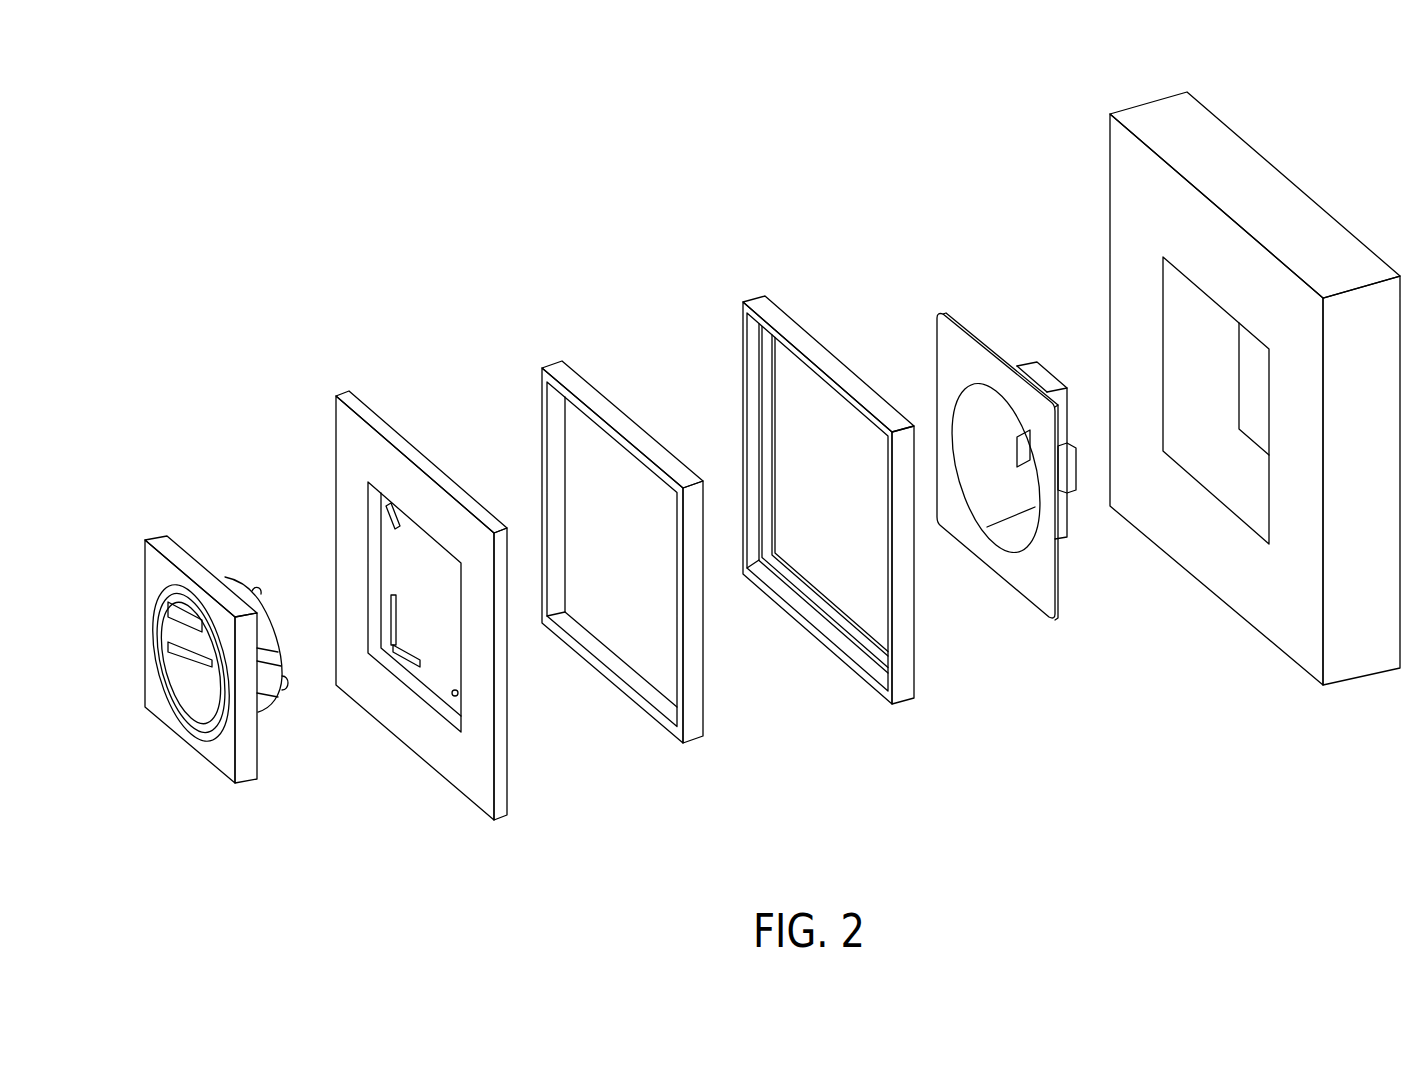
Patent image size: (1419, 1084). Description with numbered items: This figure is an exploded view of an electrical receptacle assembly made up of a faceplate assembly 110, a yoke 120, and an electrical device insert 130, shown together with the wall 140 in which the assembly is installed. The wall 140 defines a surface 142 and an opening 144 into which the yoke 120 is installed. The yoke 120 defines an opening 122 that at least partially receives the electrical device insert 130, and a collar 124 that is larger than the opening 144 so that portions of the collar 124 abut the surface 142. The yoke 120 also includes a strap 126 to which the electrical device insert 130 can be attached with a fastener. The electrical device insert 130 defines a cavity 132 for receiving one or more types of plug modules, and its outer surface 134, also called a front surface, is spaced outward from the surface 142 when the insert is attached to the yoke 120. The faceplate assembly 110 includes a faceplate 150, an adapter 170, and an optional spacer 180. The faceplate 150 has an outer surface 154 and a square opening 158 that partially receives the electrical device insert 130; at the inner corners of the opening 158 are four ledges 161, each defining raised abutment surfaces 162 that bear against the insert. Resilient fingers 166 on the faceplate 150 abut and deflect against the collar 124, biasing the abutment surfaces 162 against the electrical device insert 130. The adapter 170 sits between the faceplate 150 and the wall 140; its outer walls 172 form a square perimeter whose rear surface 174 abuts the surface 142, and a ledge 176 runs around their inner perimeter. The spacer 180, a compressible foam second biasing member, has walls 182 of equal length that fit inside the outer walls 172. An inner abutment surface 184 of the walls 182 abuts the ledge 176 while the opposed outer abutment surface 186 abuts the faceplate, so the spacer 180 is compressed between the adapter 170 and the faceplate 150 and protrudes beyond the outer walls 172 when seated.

The faceplate assembly 110 is at (479, 853).
The yoke 120 is at (953, 343).
The opening 122 is at (995, 428).
The collar 124 is at (1035, 580).
The strap 126 is at (1052, 362).
The electrical device insert 130 is at (186, 555).
The cavity 132 is at (193, 683).
The outer surface 134 is at (222, 752).
The wall 140 is at (1122, 180).
The surface 142 is at (1275, 595).
The opening 144 is at (1215, 408).
The faceplate 150 is at (336, 450).
The outer surface 154 is at (366, 455).
The opening 158 is at (388, 568).
The ledge 161 is at (337, 663).
The abutment surface 162 is at (391, 507).
The resilient finger 166 is at (398, 512).
The adapter 170 is at (773, 317).
The outer wall 172 is at (842, 374).
The rear surface 174 is at (916, 629).
The ledge 176 is at (756, 433).
The spacer 180 is at (598, 396).
The wall 182 is at (631, 434).
The inner abutment surface 184 is at (703, 635).
The outer abutment surface 186 is at (682, 644).